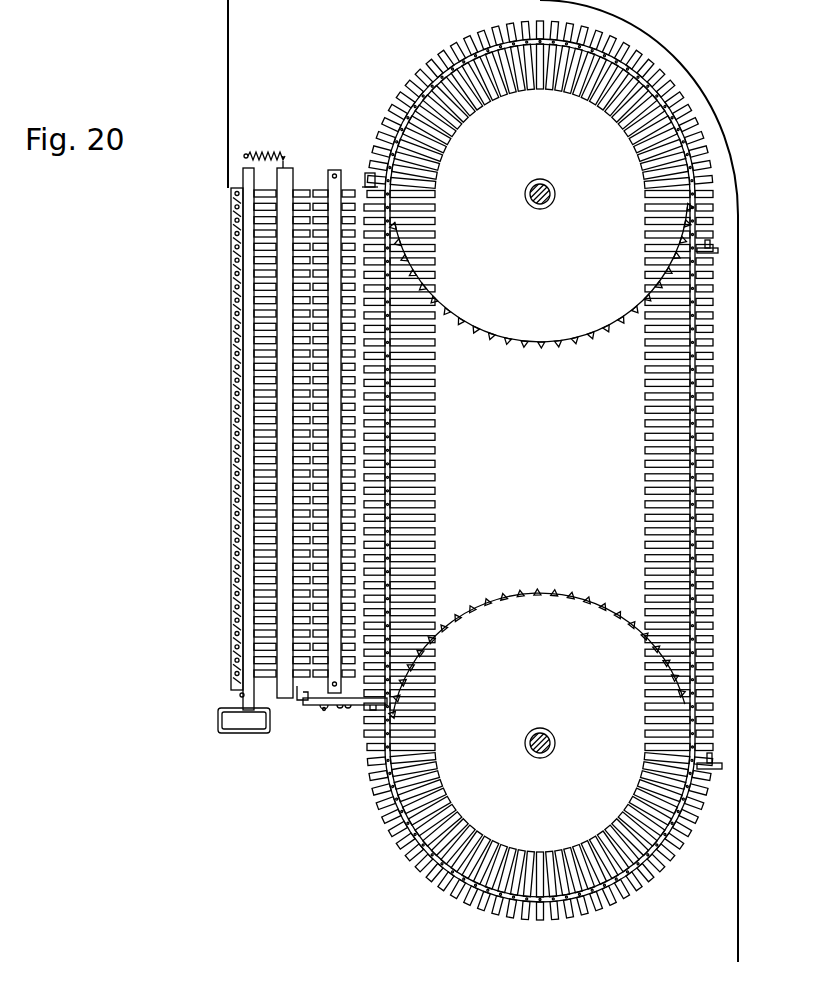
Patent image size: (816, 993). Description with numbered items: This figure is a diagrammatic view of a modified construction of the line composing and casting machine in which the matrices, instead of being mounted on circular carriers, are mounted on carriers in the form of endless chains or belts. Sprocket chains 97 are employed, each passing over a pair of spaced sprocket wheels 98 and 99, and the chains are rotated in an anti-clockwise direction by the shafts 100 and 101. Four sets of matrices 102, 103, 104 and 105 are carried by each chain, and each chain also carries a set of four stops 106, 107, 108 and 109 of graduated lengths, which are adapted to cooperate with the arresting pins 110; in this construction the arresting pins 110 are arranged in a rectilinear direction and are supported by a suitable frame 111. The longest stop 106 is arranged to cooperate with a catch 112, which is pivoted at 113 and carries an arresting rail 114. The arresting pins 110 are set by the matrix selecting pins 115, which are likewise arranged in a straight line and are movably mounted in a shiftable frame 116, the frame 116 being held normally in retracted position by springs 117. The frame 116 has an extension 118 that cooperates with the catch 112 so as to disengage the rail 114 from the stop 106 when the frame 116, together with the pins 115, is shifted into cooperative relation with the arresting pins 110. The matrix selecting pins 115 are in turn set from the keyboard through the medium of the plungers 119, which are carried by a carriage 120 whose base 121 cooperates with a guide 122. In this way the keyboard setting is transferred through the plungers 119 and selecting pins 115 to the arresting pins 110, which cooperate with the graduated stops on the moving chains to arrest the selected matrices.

The sprocket chain 97 is at (703, 779).
The sprocket wheel 98 is at (534, 342).
The sprocket wheel 99 is at (555, 594).
The shaft 100 is at (553, 190).
The shaft 101 is at (549, 736).
The set of matrices 102 is at (440, 546).
The set of matrices 103 is at (437, 48).
The set of matrices 104 is at (716, 475).
The set of matrices 105 is at (554, 932).
The stop 106 is at (373, 709).
The stop 107 is at (367, 173).
The stop 108 is at (718, 252).
The stop 109 is at (722, 767).
The arresting pins 110 is at (320, 190).
The frame 111 is at (334, 170).
The catch 112 is at (322, 712).
The pivot 113 is at (303, 701).
The arresting rail 114 is at (349, 709).
The matrix selecting pins 115 is at (300, 189).
The shiftable frame 116 is at (284, 168).
The springs 117 is at (250, 153).
The extension 118 is at (306, 701).
The plungers 119 is at (244, 188).
The carriage 120 is at (237, 366).
The base 121 is at (218, 726).
The guide 122 is at (245, 729).